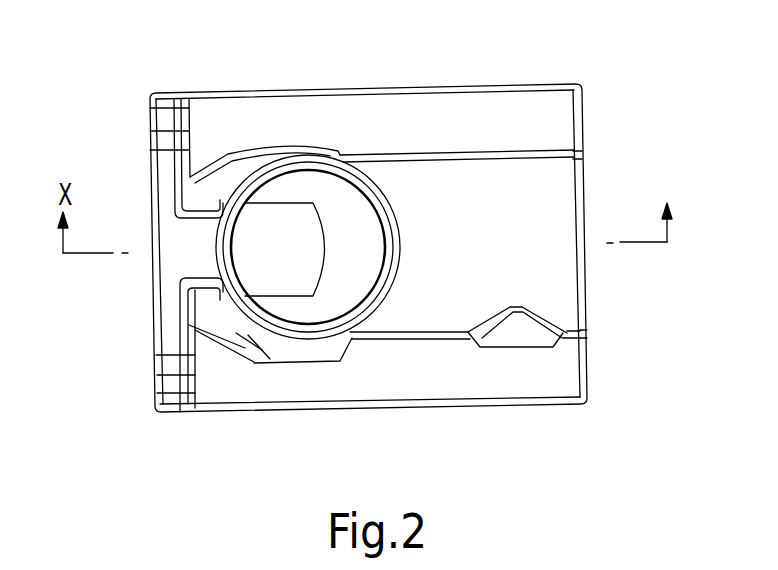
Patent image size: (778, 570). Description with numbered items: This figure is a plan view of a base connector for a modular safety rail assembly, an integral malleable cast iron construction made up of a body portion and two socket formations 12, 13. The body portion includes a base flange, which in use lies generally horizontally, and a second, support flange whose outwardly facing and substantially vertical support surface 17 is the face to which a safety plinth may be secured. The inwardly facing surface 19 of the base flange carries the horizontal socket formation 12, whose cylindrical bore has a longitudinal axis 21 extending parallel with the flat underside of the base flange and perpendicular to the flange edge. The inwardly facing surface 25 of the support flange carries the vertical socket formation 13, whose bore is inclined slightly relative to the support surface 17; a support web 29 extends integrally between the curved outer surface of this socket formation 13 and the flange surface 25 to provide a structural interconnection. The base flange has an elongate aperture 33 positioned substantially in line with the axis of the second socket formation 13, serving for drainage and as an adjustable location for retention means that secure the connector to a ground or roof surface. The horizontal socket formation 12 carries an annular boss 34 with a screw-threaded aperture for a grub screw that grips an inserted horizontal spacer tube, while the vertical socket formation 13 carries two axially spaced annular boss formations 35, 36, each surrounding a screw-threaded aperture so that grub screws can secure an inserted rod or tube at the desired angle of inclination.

The socket formation 12 is at (497, 188).
The socket formation 13 is at (289, 167).
The support surface 17 is at (150, 138).
The inwardly facing surface 19 is at (418, 118).
The longitudinal axis 21 is at (647, 245).
The inwardly facing surface 25 is at (195, 383).
The support web 29 is at (190, 252).
The aperture 33 is at (283, 293).
The annular boss 34 is at (514, 338).
The annular boss formation 35 is at (270, 402).
The annular boss formation 36 is at (281, 356).